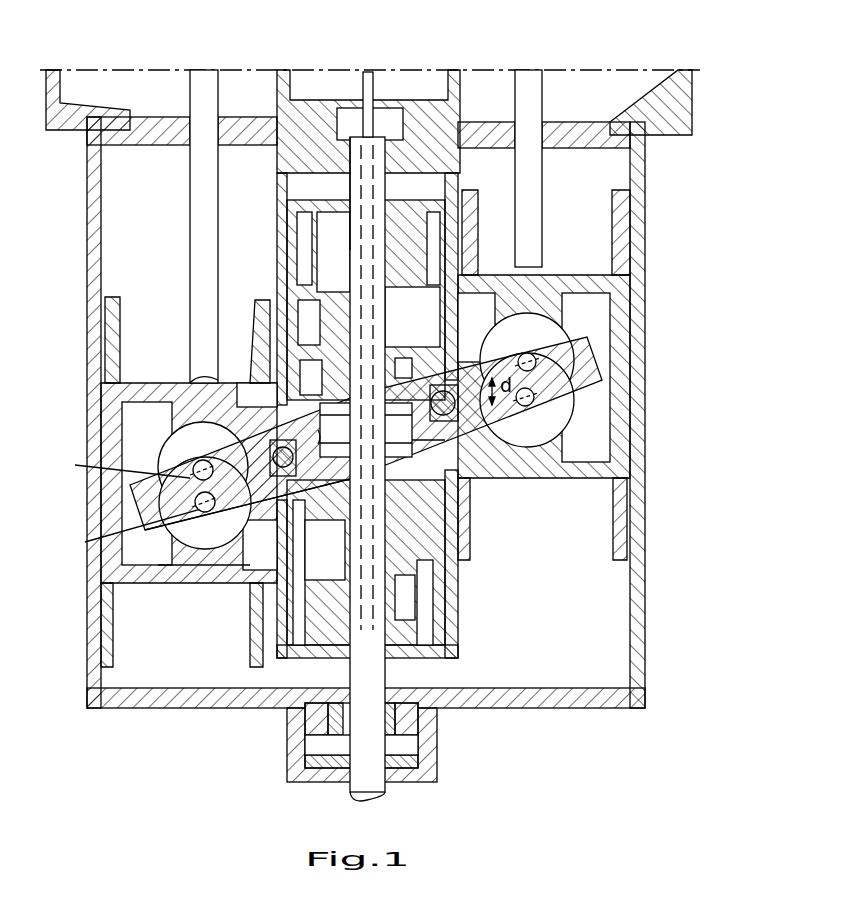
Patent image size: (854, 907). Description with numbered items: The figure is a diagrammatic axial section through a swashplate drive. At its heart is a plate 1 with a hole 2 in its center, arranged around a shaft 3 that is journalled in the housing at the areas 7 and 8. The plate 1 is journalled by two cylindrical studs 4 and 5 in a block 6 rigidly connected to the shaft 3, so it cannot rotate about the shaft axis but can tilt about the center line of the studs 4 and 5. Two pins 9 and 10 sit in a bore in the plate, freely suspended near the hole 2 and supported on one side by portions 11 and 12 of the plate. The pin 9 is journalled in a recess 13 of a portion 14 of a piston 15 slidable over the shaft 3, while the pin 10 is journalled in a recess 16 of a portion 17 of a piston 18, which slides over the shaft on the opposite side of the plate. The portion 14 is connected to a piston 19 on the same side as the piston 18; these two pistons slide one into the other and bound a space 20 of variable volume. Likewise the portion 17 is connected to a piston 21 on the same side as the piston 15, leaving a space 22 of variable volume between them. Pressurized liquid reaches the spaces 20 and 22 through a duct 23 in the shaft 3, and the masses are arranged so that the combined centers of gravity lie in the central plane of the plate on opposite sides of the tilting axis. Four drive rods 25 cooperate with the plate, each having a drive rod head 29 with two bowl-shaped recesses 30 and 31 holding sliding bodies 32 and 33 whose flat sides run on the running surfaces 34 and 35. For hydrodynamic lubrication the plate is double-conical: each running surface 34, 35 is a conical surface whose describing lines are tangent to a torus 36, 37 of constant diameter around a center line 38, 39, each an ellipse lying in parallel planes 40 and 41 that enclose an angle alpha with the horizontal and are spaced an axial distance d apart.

The plate 1 is at (592, 352).
The hole 2 is at (425, 430).
The shaft 3 is at (382, 150).
The cylindrical stud 4 is at (366, 430).
The cylindrical stud 5 is at (310, 437).
The block 6 is at (396, 452).
The journal area 7 is at (353, 150).
The journal area 8 is at (395, 720).
The pin 9 is at (456, 404).
The pin 10 is at (247, 496).
The portion of the plate 11 is at (527, 380).
The portion of the plate 12 is at (270, 448).
The recess 13 is at (426, 401).
The portion of the piston 14 is at (440, 309).
The piston 15 is at (403, 228).
The recess 16 is at (290, 440).
The portion of the piston 17 is at (290, 550).
The piston 18 is at (322, 638).
The piston 19 is at (402, 578).
The space of variable volume 20 is at (332, 559).
The piston 21 is at (300, 312).
The space of variable volume 22 is at (344, 257).
The duct 23 is at (366, 108).
The drive rod 25 is at (192, 190).
The drive rod head 29 is at (202, 392).
The spherical recess 30 is at (203, 394).
The spherical recess 31 is at (185, 572).
The sliding body 32 is at (178, 448).
The sliding body 33 is at (215, 572).
The running surface 34 is at (120, 465).
The running surface 35 is at (135, 530).
The torus 36 is at (180, 473).
The torus 37 is at (205, 525).
The center line 38 is at (190, 450).
The center line 39 is at (213, 496).
The plane 40 is at (545, 358).
The plane 41 is at (545, 390).